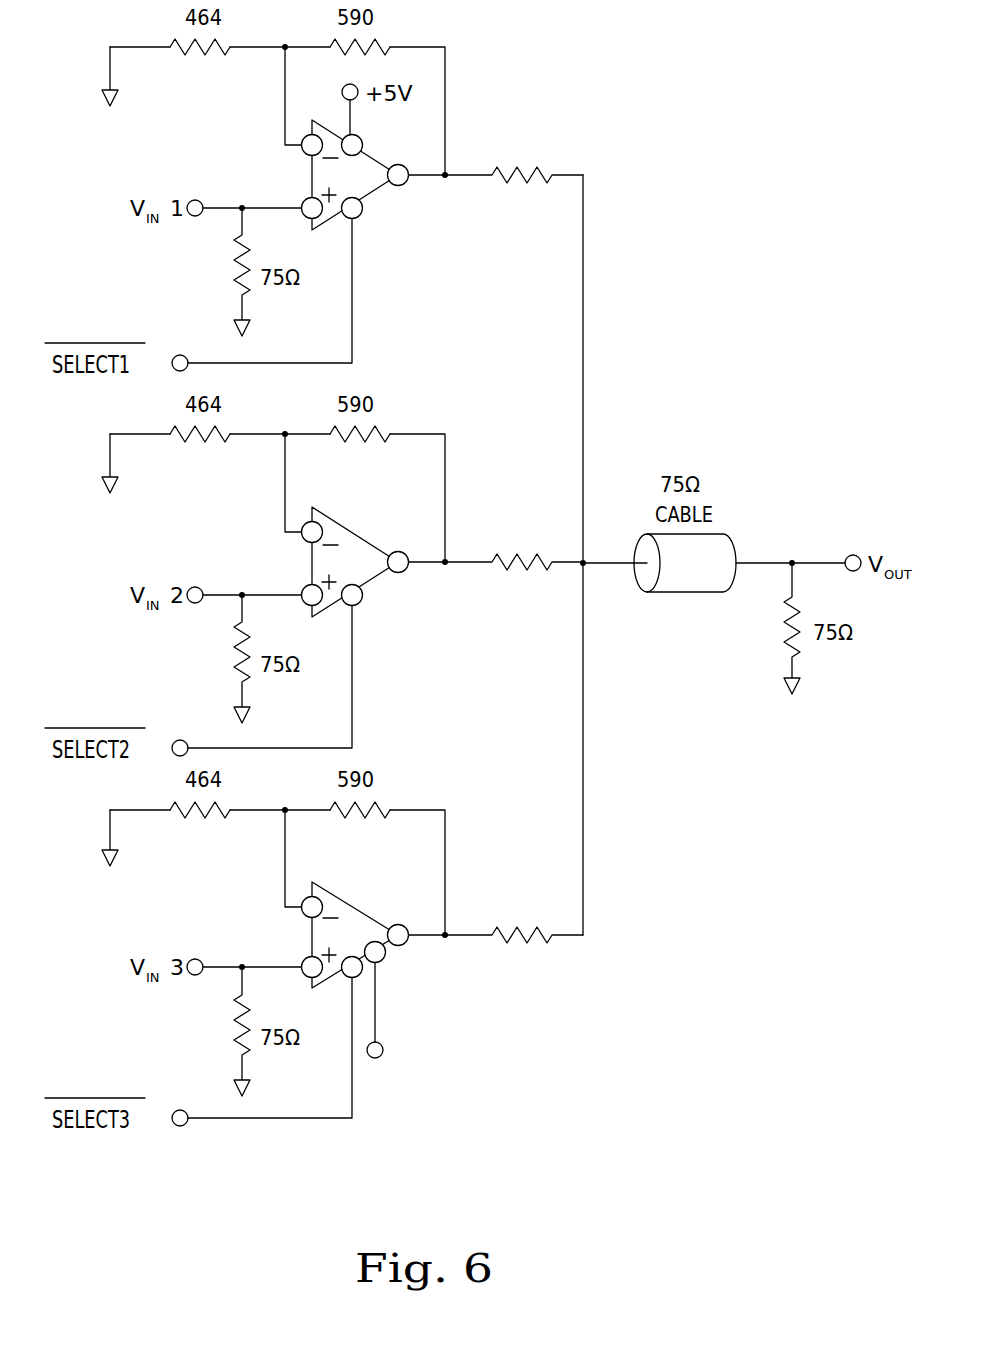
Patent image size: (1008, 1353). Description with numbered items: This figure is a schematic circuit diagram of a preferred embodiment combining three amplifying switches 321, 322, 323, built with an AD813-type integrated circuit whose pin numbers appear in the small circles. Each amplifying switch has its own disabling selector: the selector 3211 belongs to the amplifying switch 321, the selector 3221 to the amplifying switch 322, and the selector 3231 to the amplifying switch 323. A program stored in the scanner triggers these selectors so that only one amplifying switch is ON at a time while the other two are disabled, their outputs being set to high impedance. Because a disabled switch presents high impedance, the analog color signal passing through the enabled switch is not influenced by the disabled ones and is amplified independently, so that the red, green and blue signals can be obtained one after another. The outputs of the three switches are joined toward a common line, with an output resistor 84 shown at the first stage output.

The amplifying switch 321 is at (370, 182).
The amplifying switch 322 is at (410, 603).
The amplifying switch 323 is at (416, 972).
The selector 3211 is at (361, 216).
The selector 3221 is at (294, 667).
The selector 3231 is at (352, 955).
The output resistor 84 is at (496, 157).